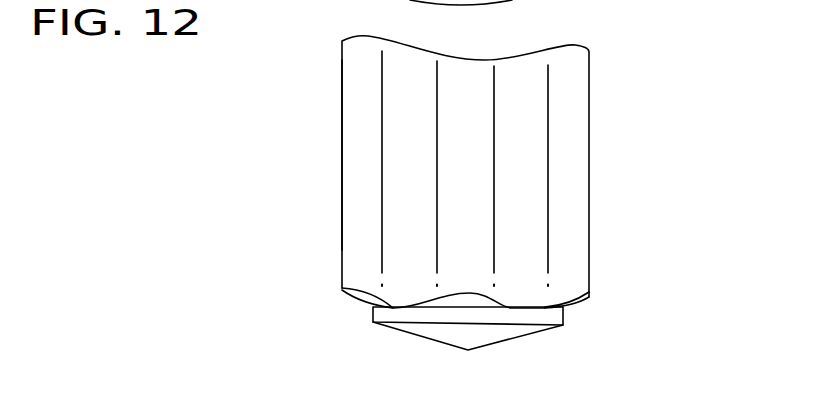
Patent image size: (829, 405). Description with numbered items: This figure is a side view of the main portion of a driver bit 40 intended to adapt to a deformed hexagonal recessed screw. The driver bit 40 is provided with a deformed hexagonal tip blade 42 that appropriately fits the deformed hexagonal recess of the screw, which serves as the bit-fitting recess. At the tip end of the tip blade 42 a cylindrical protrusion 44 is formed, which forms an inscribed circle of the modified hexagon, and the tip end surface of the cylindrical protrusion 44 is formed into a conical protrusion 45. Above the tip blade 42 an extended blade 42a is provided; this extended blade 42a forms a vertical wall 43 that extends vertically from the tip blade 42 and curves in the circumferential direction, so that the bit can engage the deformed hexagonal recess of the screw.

The driver bit 40 is at (477, 220).
The deformed hexagonal tip blade 42 is at (328, 301).
The extended blade 42a is at (324, 97).
The vertical wall 43 is at (533, 210).
The cylindrical protrusion 44 is at (565, 316).
The conical protrusion 45 is at (492, 333).